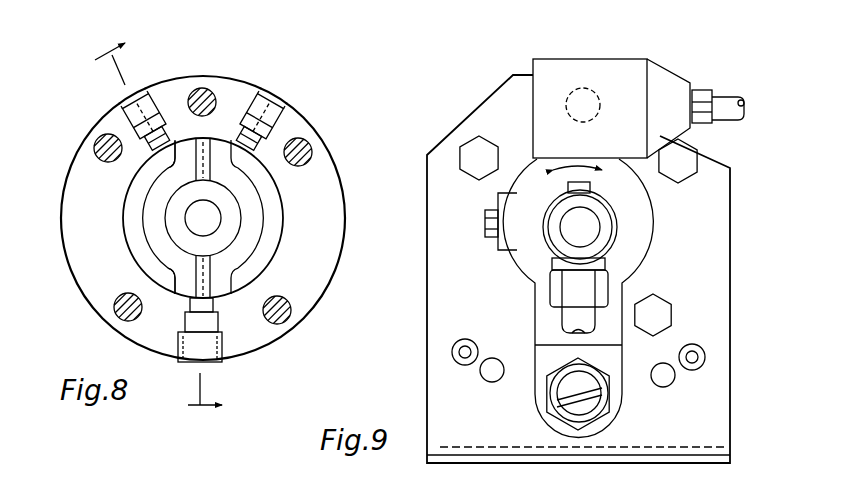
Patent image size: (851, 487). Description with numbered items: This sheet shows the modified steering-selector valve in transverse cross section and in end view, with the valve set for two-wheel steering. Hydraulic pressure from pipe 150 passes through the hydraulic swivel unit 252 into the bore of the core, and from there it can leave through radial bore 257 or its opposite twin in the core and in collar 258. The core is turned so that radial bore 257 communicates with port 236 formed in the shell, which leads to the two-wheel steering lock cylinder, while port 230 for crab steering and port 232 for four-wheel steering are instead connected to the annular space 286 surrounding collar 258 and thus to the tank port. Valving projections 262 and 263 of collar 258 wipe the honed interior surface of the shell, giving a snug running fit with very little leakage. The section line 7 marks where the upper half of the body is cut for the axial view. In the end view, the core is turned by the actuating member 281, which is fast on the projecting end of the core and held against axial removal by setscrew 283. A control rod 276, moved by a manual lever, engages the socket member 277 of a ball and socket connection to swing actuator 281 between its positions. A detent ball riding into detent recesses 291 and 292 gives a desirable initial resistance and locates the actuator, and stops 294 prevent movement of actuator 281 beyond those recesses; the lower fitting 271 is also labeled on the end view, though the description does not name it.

In FIG. 8, the line 7— 7 is at (166, 226).
In FIG. 8, the port 230 is at (140, 98).
In FIG. 8, the port 232 is at (278, 113).
In FIG. 8, the radial bore 257 is at (212, 140).
In FIG. 8, the valving projection 263 is at (175, 157).
In FIG. 8, the annular space 286 is at (263, 188).
In FIG. 8, the collar 258 is at (263, 223).
In FIG. 8, the valving projection 262 is at (175, 277).
In FIG. 8, the port 236 is at (217, 357).
In FIG. 9, the socket member 277 is at (626, 60).
In FIG. 9, the control rod 276 is at (706, 91).
In FIG. 9, the hydraulic swivel unit 252 is at (608, 217).
In FIG. 9, the actuating member 281 is at (639, 252).
In FIG. 9, the setscrew 283 is at (486, 228).
In FIG. 9, the pipe 150 is at (563, 320).
In FIG. 9, the stops 294 is at (452, 348).
In FIG. 9, the detent recess 291 is at (480, 375).
In FIG. 9, the detent recess 292 is at (677, 377).
In FIG. 9, the plug 271 is at (616, 400).